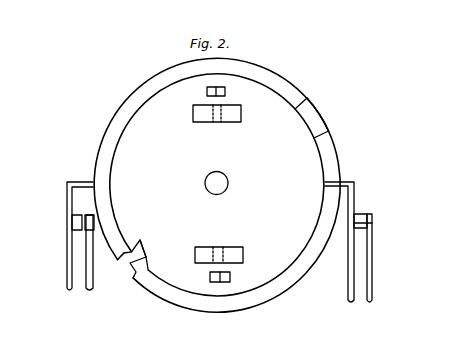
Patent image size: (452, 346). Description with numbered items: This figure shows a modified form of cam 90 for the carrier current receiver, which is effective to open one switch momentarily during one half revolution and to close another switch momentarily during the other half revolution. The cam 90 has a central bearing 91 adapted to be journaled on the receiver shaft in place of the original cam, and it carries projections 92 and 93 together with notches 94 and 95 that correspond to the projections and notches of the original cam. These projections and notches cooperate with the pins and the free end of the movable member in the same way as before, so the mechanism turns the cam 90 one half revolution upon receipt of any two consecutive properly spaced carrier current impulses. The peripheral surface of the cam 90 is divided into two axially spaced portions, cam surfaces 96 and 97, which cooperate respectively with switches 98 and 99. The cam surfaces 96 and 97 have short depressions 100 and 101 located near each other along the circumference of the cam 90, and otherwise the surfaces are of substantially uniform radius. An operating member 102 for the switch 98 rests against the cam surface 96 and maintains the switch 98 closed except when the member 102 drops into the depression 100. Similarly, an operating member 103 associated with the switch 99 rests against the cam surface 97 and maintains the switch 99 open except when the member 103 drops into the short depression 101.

The cam 90 is at (309, 100).
The central bearing 91 is at (221, 183).
The projection 92 is at (233, 122).
The projection 93 is at (203, 247).
The notch 94 is at (225, 92).
The notch 95 is at (230, 277).
The cam surface 96 is at (330, 133).
The cam surface 97 is at (324, 116).
The switch 98 is at (364, 214).
The switch 99 is at (73, 222).
The depression 100 is at (142, 239).
The depression 101 is at (124, 256).
The operating member 102 is at (337, 179).
The operating member 103 is at (82, 182).